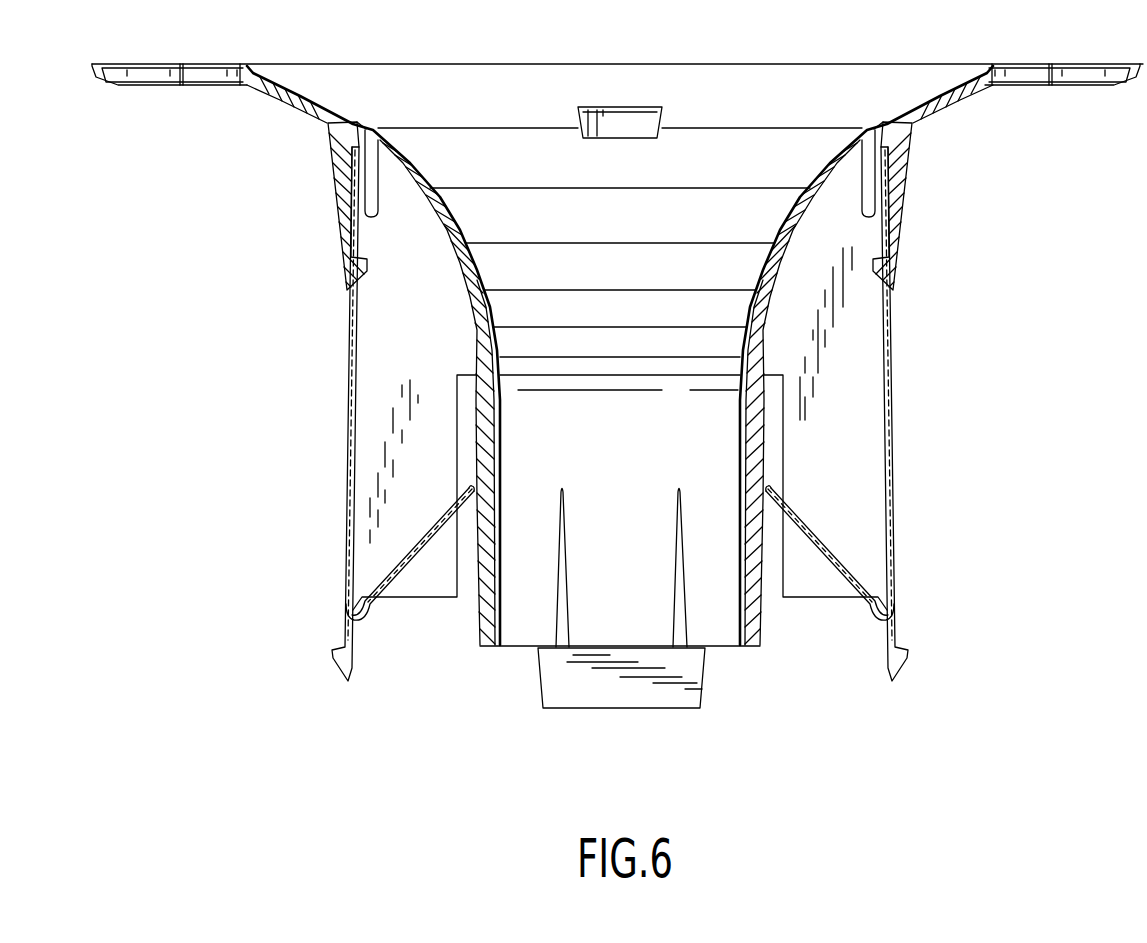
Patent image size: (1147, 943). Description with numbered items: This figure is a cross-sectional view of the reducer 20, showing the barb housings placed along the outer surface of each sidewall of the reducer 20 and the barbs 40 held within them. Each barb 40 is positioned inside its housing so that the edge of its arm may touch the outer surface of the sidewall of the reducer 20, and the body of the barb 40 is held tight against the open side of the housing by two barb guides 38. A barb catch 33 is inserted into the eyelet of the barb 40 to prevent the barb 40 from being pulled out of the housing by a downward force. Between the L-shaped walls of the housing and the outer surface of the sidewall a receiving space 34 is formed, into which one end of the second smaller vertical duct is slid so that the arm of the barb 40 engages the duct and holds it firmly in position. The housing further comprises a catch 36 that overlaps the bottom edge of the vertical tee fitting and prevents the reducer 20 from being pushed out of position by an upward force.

The reducer 20 is at (968, 132).
The barb catch 33 is at (347, 248).
The receiving space 34 is at (465, 580).
The catch 36 is at (337, 668).
The barb guide 38 is at (368, 193).
The barb 40 is at (373, 613).